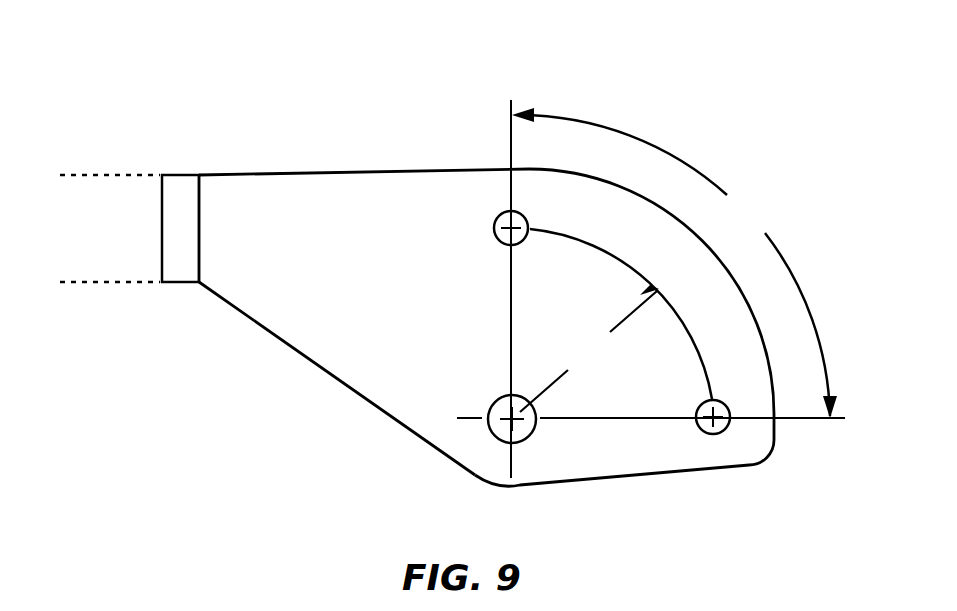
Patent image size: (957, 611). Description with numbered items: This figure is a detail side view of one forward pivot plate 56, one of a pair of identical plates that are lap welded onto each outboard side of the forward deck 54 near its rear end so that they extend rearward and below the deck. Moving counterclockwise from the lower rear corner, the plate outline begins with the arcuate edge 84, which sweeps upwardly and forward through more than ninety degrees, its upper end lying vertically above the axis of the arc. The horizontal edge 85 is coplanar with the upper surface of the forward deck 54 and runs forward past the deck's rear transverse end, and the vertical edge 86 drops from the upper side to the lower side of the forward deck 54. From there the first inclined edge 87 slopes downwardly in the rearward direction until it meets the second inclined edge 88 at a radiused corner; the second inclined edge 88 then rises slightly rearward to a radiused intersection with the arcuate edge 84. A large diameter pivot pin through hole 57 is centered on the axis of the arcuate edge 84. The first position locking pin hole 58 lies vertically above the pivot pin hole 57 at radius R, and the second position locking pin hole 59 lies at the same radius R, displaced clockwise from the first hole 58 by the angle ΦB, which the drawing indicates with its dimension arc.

The forward deck 54 is at (182, 172).
The forward pivot plate 56 is at (730, 142).
The pivot pin through hole 57 is at (490, 428).
The first position locking pin hole 58 is at (494, 230).
The second position locking pin hole 59 is at (725, 430).
The arcuate edge 84 is at (540, 170).
The horizontal edge 85 is at (356, 170).
The vertical edge 86 is at (200, 222).
The first inclined edge 87 is at (328, 368).
The second inclined edge 88 is at (616, 476).